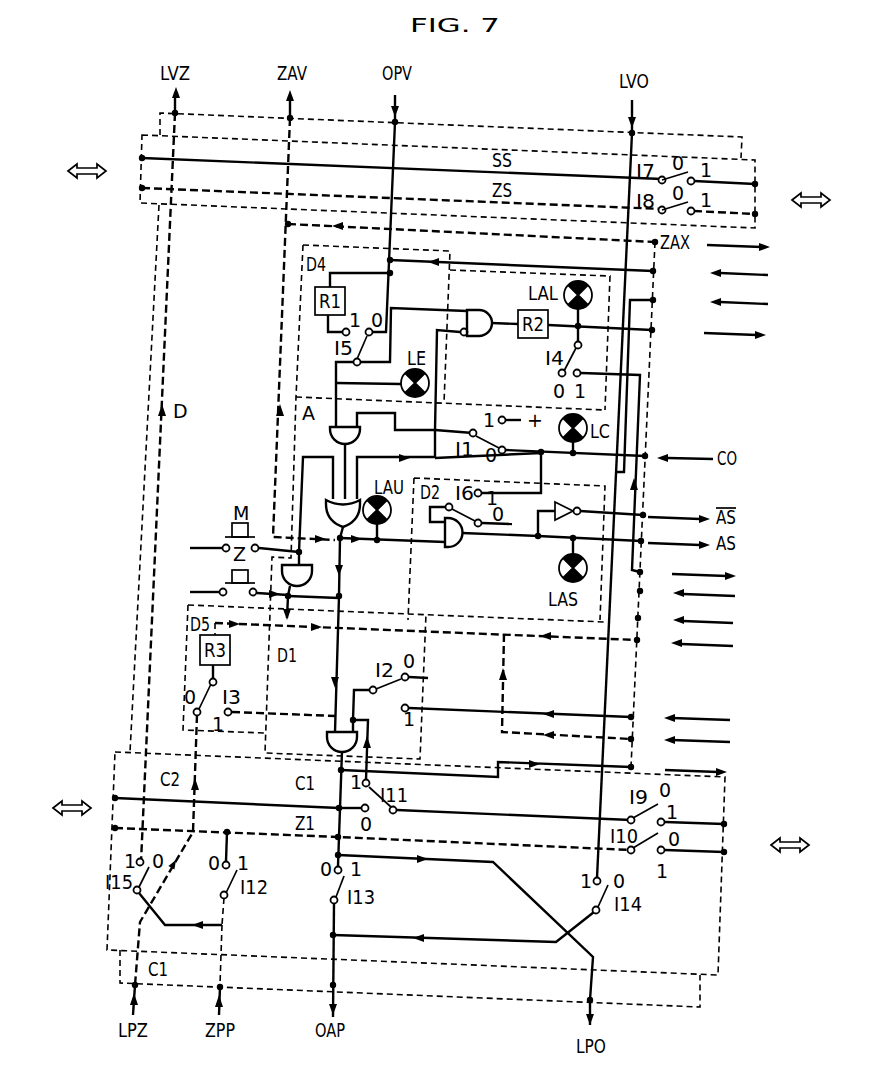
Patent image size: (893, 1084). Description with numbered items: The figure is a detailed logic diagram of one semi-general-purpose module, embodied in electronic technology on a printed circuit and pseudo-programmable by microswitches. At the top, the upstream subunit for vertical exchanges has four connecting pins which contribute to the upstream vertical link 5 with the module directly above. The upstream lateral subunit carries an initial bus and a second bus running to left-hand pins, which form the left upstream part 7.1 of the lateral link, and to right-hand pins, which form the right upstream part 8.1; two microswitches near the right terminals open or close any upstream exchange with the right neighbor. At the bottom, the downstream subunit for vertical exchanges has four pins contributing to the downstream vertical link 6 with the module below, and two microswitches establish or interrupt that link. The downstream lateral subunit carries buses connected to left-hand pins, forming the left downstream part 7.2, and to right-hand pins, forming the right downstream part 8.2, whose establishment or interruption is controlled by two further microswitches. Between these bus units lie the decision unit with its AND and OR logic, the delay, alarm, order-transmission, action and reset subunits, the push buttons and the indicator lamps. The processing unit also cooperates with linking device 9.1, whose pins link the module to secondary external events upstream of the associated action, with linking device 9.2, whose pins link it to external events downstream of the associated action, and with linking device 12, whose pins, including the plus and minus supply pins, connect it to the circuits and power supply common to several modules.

The upstream vertical link 5 is at (447, 146).
The downstream vertical link 6 is at (416, 896).
The upstream part of left lateral link 7.1 is at (106, 168).
The downstream part of left lateral link 7.2 is at (85, 806).
The upstream part of right lateral link 8.1 is at (791, 197).
The downstream part of right lateral link 8.2 is at (765, 838).
The upstream external event linking device 9.1 is at (727, 300).
The downstream external event linking device 9.2 is at (698, 742).
The common circuit and power supply linking device 12 is at (696, 606).